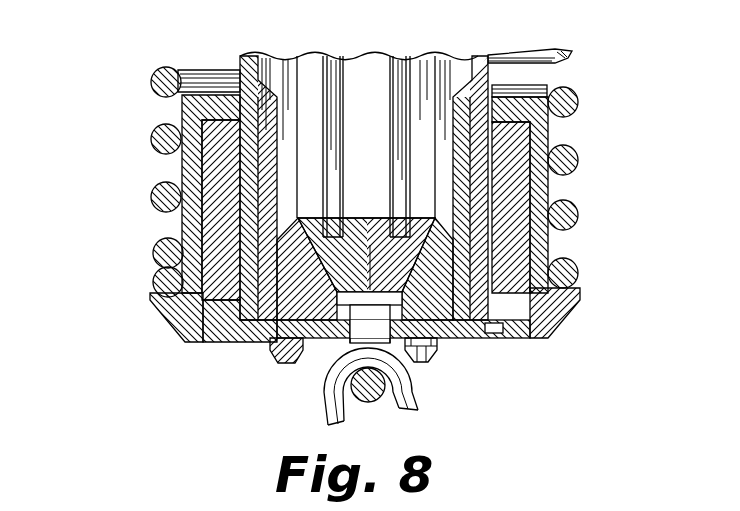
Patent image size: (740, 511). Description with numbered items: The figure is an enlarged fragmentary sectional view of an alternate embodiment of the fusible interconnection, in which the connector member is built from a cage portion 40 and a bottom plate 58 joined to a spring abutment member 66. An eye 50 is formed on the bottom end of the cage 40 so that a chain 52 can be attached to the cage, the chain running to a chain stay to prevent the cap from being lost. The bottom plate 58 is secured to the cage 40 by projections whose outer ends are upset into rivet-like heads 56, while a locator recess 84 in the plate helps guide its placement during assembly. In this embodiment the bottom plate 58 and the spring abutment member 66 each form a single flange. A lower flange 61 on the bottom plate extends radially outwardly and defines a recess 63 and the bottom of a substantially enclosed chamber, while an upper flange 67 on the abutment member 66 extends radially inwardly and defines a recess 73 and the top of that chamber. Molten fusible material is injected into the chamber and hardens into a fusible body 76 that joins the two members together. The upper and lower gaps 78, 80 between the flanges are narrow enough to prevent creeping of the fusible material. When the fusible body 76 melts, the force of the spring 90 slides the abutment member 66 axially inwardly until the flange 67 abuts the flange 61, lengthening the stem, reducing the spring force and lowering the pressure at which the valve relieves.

The cage portion of the connector member 40 is at (244, 56).
The upper gap 78 is at (493, 88).
The spring 90 is at (147, 78).
The upper flange 67 is at (518, 89).
The recess 73 is at (507, 127).
The fusible body 76 is at (197, 165).
The lower gap 80 is at (203, 342).
The recess 63 is at (244, 306).
The lower flange 61 is at (207, 343).
The locator recess 84 is at (498, 340).
The bottom plate 58 is at (300, 358).
The rivet-like heads 56 is at (433, 358).
The eye 50 is at (397, 397).
The chain 52 is at (330, 403).
The spring abutment member 66 is at (568, 325).